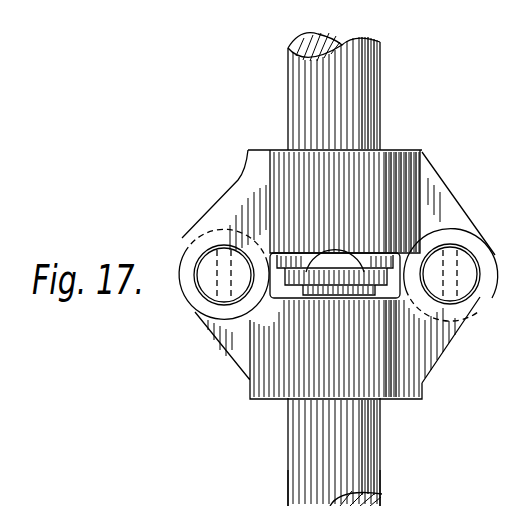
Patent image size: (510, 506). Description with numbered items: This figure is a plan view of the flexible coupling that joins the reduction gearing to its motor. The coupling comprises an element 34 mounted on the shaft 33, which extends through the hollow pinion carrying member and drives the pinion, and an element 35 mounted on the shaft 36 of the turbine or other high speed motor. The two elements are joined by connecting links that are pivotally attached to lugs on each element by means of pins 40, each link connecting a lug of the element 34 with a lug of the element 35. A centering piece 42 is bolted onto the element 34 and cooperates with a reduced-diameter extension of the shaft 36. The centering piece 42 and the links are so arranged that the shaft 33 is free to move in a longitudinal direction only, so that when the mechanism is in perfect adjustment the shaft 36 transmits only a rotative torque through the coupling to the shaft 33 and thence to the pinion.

The shaft 33 is at (367, 96).
The coupling element 34 is at (275, 165).
The coupling element 35 is at (418, 358).
The shaft 36 is at (363, 463).
The pins 40 is at (210, 263).
The centering piece 42 is at (294, 286).